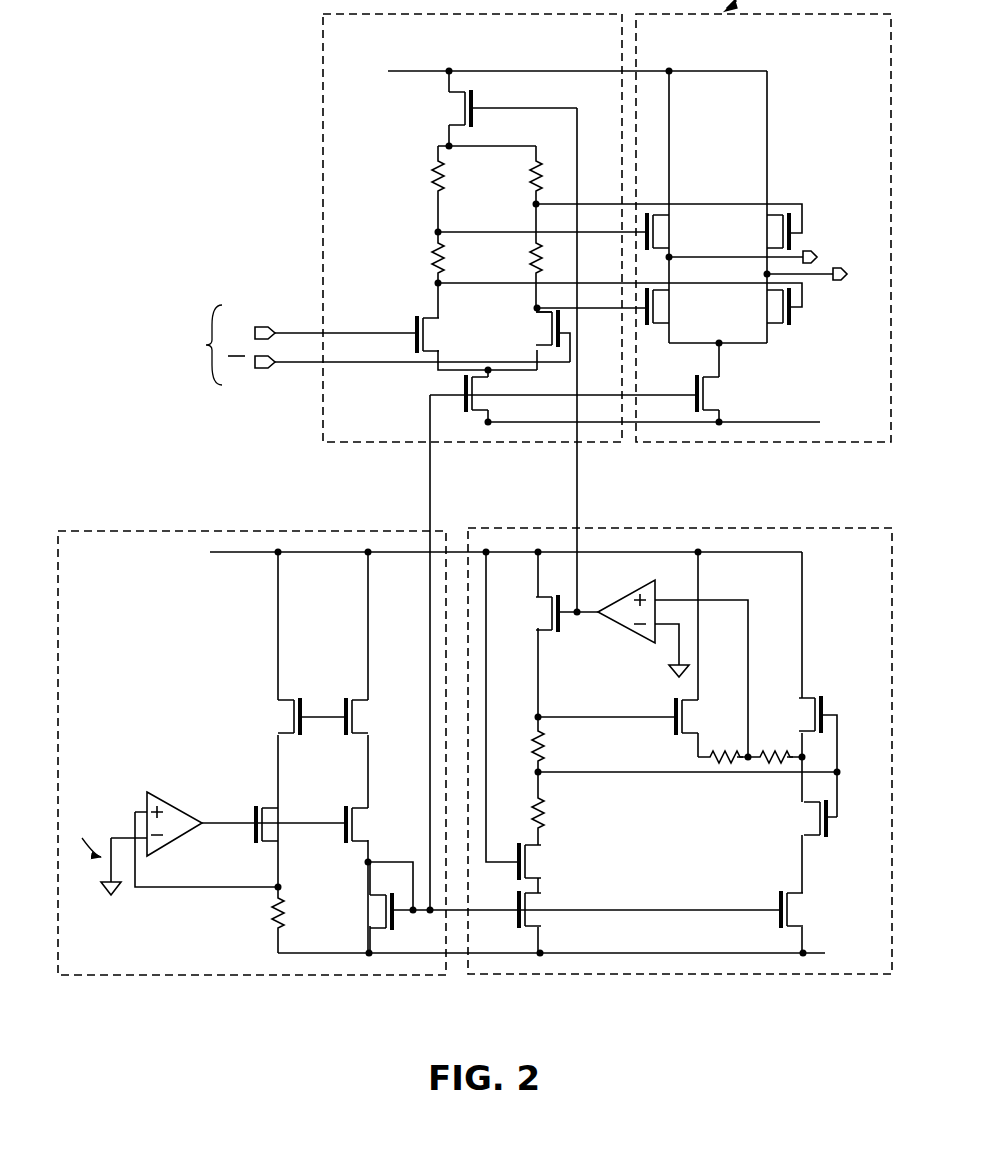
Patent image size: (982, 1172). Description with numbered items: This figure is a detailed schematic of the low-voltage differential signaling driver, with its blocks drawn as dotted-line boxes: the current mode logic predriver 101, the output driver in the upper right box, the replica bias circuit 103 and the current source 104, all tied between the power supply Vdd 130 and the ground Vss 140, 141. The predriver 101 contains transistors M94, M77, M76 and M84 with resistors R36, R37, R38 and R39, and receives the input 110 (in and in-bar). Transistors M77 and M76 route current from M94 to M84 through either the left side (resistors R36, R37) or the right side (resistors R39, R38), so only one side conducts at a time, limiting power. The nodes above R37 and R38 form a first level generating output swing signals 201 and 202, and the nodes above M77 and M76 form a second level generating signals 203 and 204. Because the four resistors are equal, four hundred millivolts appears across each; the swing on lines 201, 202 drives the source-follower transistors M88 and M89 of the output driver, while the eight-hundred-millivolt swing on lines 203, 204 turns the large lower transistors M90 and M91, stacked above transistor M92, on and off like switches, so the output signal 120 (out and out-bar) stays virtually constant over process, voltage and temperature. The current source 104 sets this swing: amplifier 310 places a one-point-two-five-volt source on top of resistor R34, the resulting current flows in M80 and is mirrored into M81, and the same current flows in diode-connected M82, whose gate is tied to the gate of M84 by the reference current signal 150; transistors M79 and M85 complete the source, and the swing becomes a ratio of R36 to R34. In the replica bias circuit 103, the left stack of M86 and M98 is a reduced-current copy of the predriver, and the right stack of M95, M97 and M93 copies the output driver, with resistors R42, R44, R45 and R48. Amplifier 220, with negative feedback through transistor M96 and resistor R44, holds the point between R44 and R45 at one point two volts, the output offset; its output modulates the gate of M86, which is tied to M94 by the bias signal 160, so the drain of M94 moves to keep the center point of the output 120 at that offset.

The current mode logic predriver 101 is at (316, 166).
The replica bias circuit 103 is at (690, 524).
The current source 104 is at (148, 523).
The input 110 is at (366, 345).
The output signal 120 is at (860, 237).
The supply voltage Vdd node 130 is at (445, 67).
The ground Vss 140 is at (793, 419).
The Vss supply node 141 is at (822, 920).
The reference current signal 150 is at (427, 785).
The bias signal 160 is at (584, 500).
The output swing line 201 is at (600, 203).
The output swing line 202 is at (600, 234).
The output swing line 203 is at (598, 286).
The output swing line 204 is at (595, 311).
The amplifier 220 is at (621, 631).
The operational amplifier 310 is at (160, 781).
The transistor M94 is at (462, 112).
The transistor M77 is at (416, 326).
The transistor M76 is at (554, 334).
The transistor M84 is at (462, 381).
The transistor M92 is at (705, 388).
The transistor M88 is at (655, 233).
The transistor M89 is at (782, 235).
The transistor M90 is at (782, 310).
The transistor M91 is at (655, 308).
The transistor M80 is at (298, 714).
The transistor M81 is at (353, 715).
The transistor M79 is at (256, 806).
The transistor M85 is at (355, 820).
The transistor M82 is at (390, 908).
The transistor M86 is at (558, 609).
The transistor M96 is at (676, 710).
The transistor M95 is at (825, 697).
The transistor M97 is at (818, 815).
The transistor M98 is at (527, 858).
The transistor M93 is at (781, 892).
The resistor R36 is at (432, 182).
The resistor R37 is at (431, 257).
The resistor R38 is at (530, 257).
The resistor R39 is at (530, 182).
The resistor R34 is at (272, 912).
The resistor R42 is at (546, 807).
The resistor R44 is at (722, 745).
The resistor R45 is at (770, 745).
The resistor R48 is at (546, 738).